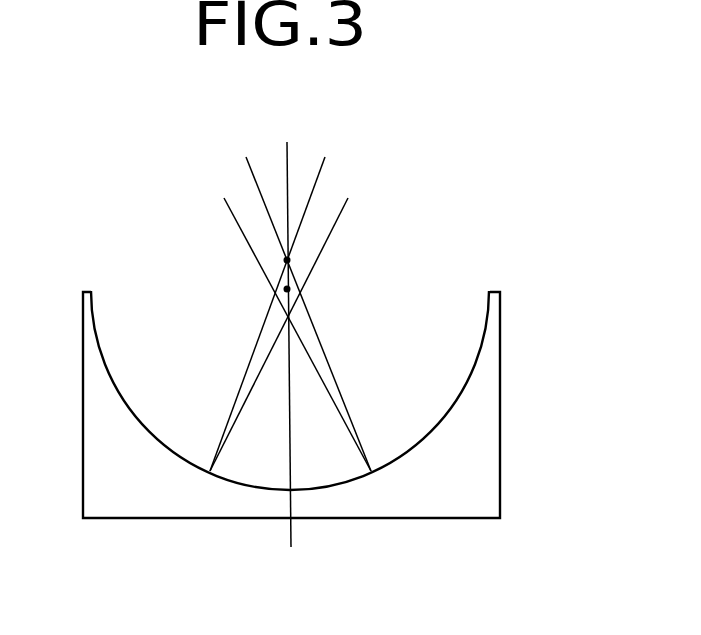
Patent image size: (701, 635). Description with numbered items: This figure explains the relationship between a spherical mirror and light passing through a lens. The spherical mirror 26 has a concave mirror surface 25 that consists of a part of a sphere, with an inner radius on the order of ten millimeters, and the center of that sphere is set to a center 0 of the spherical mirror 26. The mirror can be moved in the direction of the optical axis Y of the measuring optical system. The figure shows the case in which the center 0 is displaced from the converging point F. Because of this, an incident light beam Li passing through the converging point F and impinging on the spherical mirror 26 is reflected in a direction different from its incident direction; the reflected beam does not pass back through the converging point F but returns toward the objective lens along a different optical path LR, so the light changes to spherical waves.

The concave mirror surface 25 is at (120, 386).
The spherical mirror 26 is at (501, 342).
The converging point F is at (287, 260).
The center of the spherical mirror 0 is at (289, 288).
The optical axis Y is at (292, 363).
The reflected optical path LR is at (363, 218).
The incident light beam Li is at (335, 338).